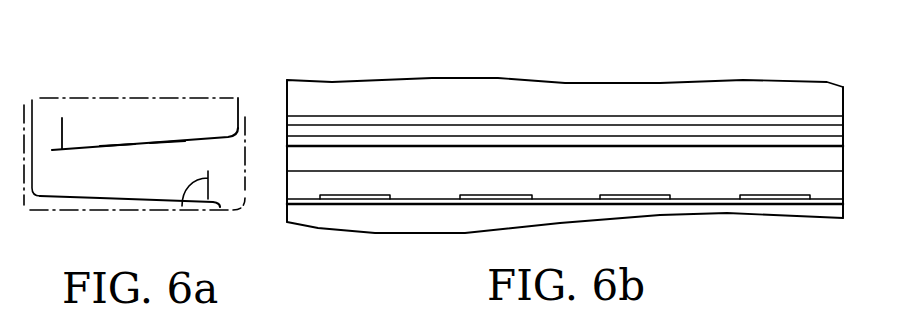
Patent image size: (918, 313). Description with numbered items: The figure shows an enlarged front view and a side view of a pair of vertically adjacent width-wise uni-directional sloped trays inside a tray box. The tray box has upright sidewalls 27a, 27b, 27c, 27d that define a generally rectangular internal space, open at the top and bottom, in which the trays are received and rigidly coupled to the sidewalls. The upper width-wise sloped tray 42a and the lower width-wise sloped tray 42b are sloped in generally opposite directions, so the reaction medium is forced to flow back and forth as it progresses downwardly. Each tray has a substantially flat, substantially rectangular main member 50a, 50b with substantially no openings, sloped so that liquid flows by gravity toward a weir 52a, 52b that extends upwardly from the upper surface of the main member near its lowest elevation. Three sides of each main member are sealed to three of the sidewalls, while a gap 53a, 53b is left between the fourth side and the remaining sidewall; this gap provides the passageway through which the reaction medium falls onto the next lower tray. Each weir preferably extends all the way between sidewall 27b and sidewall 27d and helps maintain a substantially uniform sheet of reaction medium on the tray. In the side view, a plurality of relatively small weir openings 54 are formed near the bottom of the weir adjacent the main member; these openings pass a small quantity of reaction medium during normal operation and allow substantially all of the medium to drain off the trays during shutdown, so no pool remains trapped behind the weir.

In FIG. 6a, the sidewall 27a is at (30, 106).
In FIG. 6b, the sidewall 27b is at (845, 112).
In FIG. 6a, the sidewall 27c is at (240, 108).
In FIG. 6b, the sidewall 27d is at (287, 113).
In FIG. 6a, the width-wise sloped tray 42a is at (165, 141).
In FIG. 6b, the width-wise sloped tray 42a is at (717, 141).
In FIG. 6a, the width-wise sloped tray 42b is at (80, 199).
In FIG. 6b, the width-wise sloped tray 42b is at (660, 205).
In FIG. 6a, the main member 50a is at (117, 143).
In FIG. 6a, the main member 50b is at (130, 200).
In FIG. 6a, the weir 52a is at (62, 120).
In FIG. 6b, the weir 52a is at (582, 120).
In FIG. 6a, the weir 52b is at (182, 207).
In FIG. 6b, the weir 52b is at (586, 183).
In FIG. 6a, the gap 53a is at (40, 147).
In FIG. 6a, the gap 53b is at (231, 208).
In FIG. 6b, the weir opening 54 is at (481, 199).